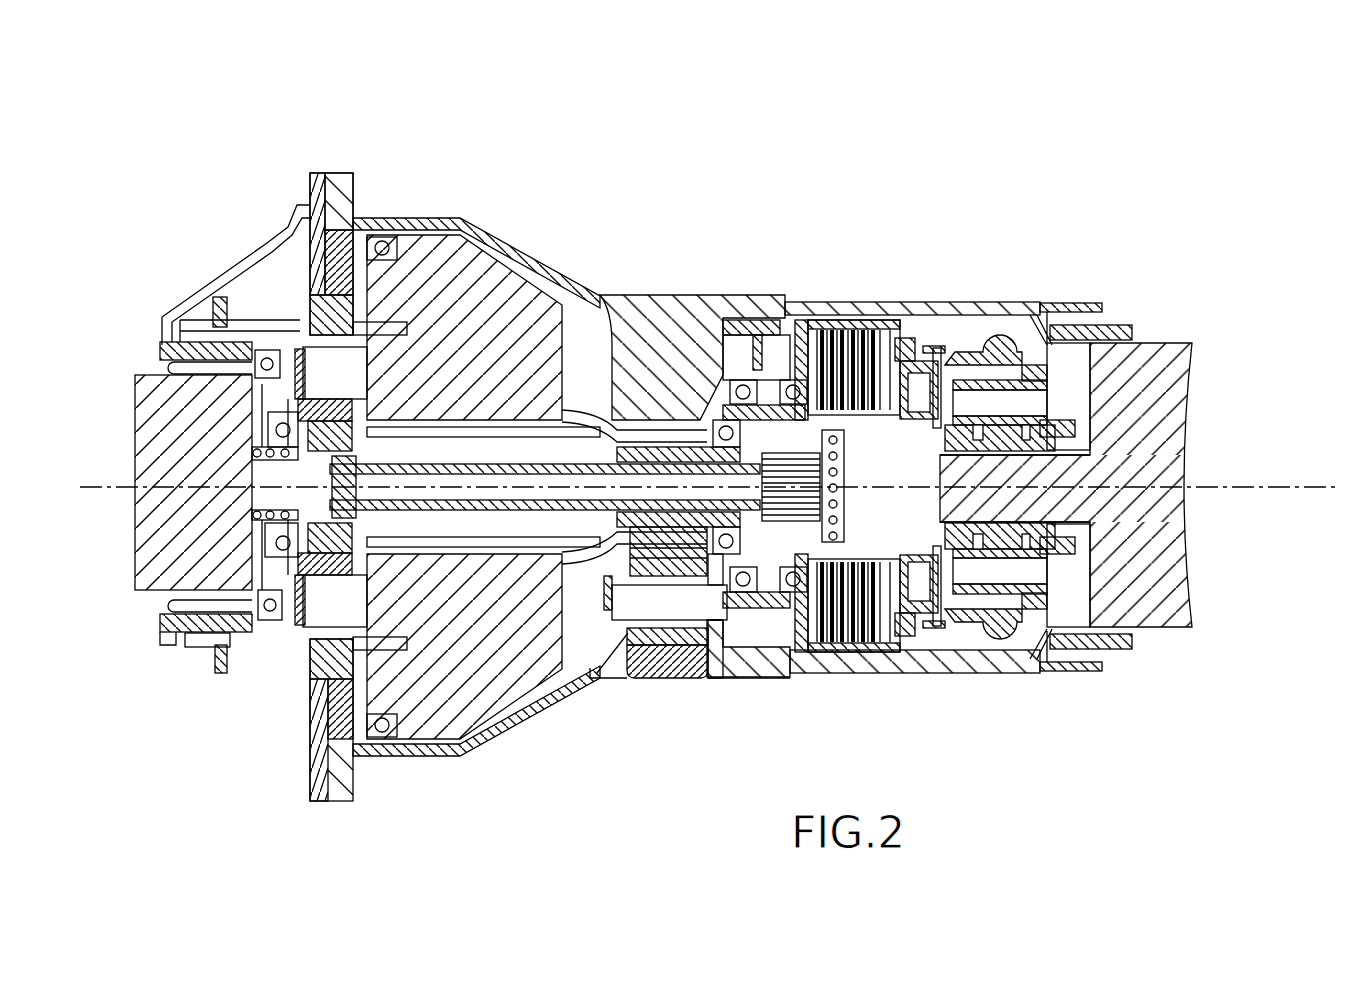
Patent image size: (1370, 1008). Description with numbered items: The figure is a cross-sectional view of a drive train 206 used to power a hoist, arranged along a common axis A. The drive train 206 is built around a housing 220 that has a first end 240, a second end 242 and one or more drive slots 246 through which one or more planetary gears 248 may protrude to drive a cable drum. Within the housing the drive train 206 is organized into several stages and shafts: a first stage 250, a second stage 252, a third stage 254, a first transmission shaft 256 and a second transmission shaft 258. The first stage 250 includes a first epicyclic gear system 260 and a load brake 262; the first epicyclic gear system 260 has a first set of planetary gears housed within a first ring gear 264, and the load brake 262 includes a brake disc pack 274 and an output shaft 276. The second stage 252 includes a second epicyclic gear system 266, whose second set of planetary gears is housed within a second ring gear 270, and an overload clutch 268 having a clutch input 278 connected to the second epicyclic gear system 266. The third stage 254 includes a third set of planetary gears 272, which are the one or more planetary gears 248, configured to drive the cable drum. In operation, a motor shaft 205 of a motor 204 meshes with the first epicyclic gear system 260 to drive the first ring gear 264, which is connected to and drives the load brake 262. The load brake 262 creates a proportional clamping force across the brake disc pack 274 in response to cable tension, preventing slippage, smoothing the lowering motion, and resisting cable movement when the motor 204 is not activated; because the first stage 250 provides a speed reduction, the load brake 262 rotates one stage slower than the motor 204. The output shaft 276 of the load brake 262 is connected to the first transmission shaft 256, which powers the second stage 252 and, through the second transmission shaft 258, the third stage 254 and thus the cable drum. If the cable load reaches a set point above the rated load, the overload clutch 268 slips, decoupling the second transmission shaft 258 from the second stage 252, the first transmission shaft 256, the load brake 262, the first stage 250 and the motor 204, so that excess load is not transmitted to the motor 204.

The drive train 206 is at (872, 110).
The second end 242 is at (380, 222).
The clutch input 278 is at (397, 330).
The overload clutch 268 is at (470, 268).
The second epicyclic gear system 266 is at (298, 292).
The second transmission shaft 258 is at (573, 418).
The housing 220 is at (667, 295).
The output shaft 276 is at (800, 310).
The load brake 262 is at (840, 305).
The brake disc pack 274 is at (872, 305).
The first ring gear 264 is at (963, 338).
The first epicyclic gear system 260 is at (995, 305).
The first end 240 is at (1073, 300).
The motor 204 is at (1220, 605).
The motor shaft 205 is at (1108, 508).
The axis A is at (1328, 487).
The first stage 250 is at (1000, 690).
The drive slots 246 is at (708, 668).
The third set of planetary gears 272 is at (688, 675).
The planetary gears 248 is at (652, 675).
The third stage 254 is at (613, 700).
The first transmission shaft 256 is at (548, 510).
The second stage 252 is at (425, 773).
The second ring gear 270 is at (318, 707).